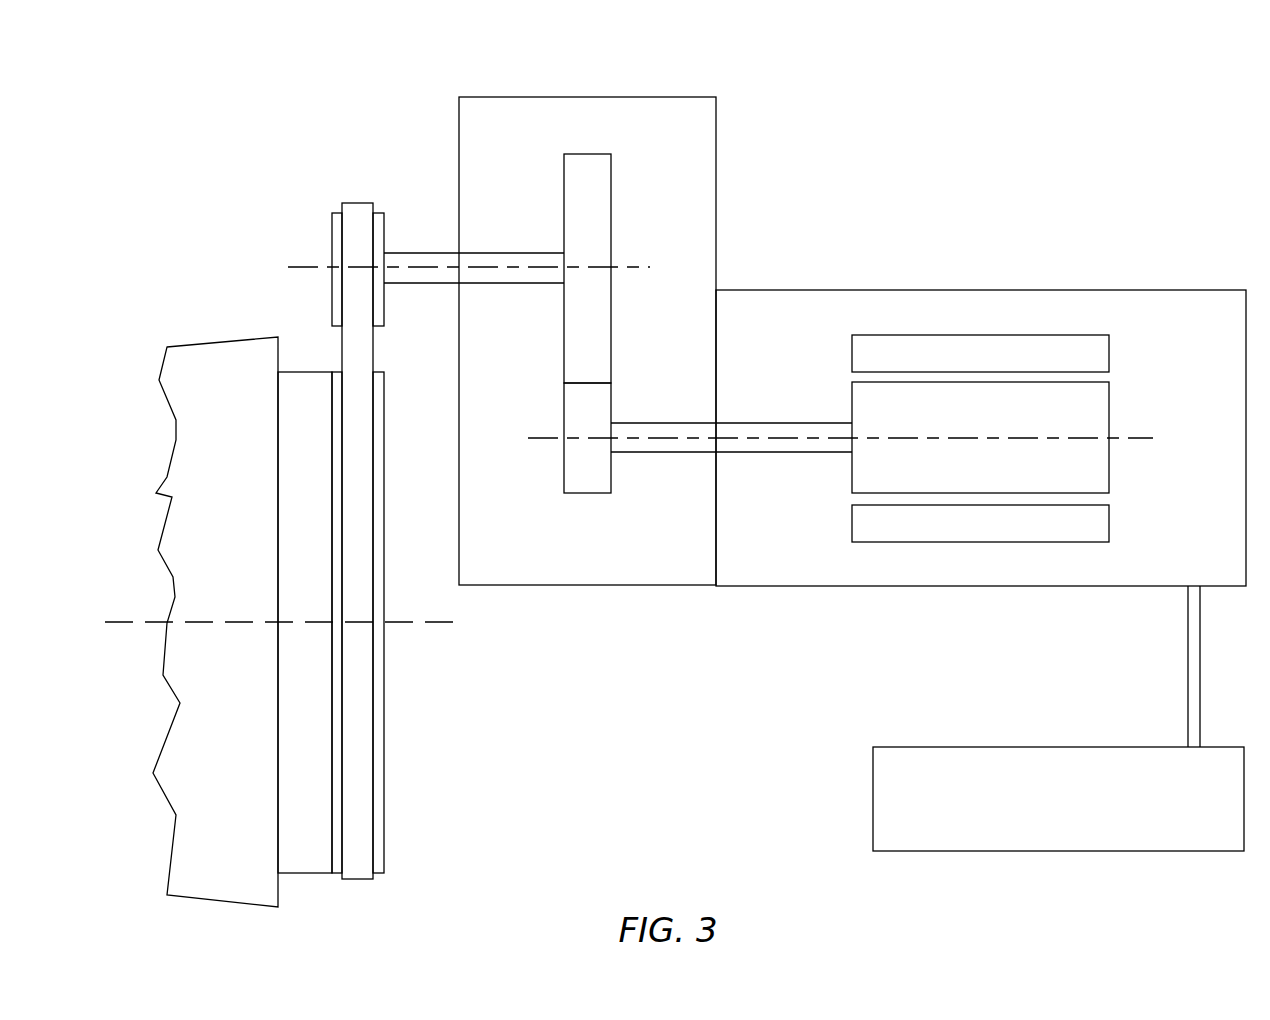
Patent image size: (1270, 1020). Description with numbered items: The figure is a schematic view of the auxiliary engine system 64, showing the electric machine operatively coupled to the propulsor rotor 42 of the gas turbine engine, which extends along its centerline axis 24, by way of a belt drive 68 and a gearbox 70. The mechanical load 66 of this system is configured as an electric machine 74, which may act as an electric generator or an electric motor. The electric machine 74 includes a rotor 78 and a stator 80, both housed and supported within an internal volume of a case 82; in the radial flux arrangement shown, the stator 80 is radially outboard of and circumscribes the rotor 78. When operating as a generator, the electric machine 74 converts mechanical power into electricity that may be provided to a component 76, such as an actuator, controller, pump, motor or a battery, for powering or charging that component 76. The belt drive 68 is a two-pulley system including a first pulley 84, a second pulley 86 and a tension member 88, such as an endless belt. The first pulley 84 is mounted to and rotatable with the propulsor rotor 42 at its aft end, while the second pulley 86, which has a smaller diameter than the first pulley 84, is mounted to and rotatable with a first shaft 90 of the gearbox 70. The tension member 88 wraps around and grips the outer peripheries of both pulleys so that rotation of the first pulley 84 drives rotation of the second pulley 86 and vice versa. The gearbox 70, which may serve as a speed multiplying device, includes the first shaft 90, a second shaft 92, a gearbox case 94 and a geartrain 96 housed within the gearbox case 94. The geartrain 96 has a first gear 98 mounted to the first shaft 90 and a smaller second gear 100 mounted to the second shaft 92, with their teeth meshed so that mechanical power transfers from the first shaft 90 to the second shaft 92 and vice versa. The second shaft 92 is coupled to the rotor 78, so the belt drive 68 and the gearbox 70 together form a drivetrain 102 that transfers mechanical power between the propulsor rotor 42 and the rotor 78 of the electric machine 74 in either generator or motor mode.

The centerline axis 24 is at (110, 627).
The propulsor rotor 42 is at (203, 337).
The auxiliary engine system 64 is at (1095, 122).
The mechanical load 66 is at (981, 389).
The belt drive 68 is at (315, 163).
The gearbox 70 is at (723, 99).
The electric machine 74 is at (981, 401).
The component 76 is at (1044, 827).
The rotor 78 is at (1109, 403).
The stator 80 is at (1109, 351).
The case 82 is at (1172, 290).
The first pulley 84 is at (384, 830).
The second pulley 86 is at (332, 236).
The tension member 88 is at (357, 203).
The first shaft 90 is at (427, 283).
The second shaft 92 is at (665, 455).
The gearbox case 94 is at (716, 132).
The geartrain 96 is at (583, 366).
The first gear 98 is at (611, 196).
The second gear 100 is at (564, 407).
The drivetrain 102 is at (535, 605).